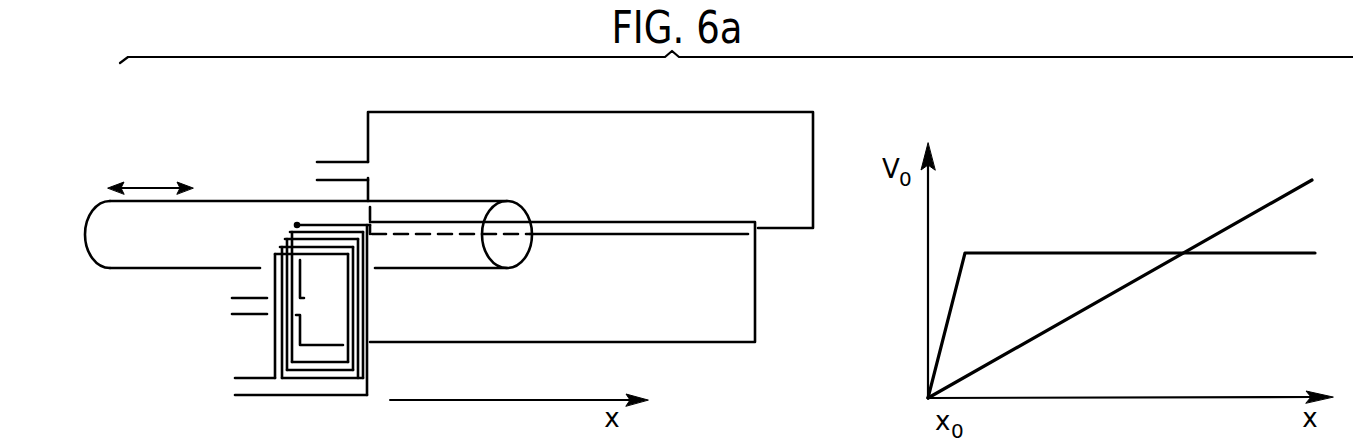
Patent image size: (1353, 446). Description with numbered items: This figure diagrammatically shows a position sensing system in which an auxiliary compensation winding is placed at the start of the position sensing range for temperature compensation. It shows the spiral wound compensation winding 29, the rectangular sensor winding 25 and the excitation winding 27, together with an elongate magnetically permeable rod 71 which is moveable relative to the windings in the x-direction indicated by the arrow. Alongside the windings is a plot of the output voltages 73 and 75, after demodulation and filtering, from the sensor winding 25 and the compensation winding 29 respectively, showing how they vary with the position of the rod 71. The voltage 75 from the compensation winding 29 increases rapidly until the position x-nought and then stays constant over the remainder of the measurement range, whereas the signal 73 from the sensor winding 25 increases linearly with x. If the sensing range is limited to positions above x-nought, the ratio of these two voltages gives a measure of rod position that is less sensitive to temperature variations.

The elongate magnetically permeable rod 71 is at (214, 217).
The spiral wound compensation winding 29 is at (273, 334).
The excitation winding 27 is at (607, 111).
The rectangular sensor winding 25 is at (702, 343).
The output voltage from compensation winding 75 is at (1098, 252).
The output voltage from sensor winding 73 is at (1271, 203).